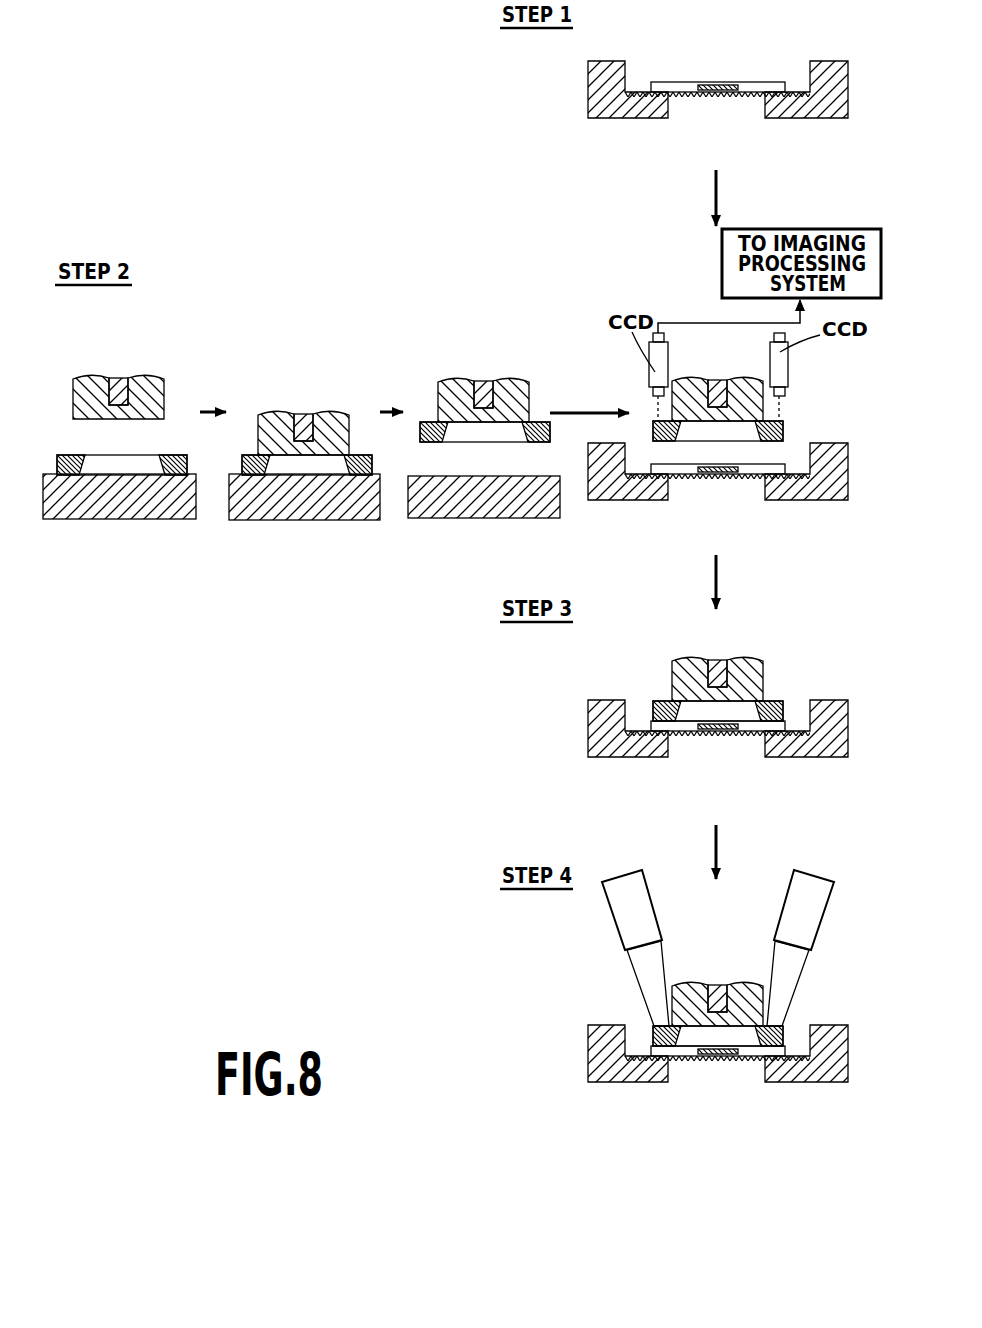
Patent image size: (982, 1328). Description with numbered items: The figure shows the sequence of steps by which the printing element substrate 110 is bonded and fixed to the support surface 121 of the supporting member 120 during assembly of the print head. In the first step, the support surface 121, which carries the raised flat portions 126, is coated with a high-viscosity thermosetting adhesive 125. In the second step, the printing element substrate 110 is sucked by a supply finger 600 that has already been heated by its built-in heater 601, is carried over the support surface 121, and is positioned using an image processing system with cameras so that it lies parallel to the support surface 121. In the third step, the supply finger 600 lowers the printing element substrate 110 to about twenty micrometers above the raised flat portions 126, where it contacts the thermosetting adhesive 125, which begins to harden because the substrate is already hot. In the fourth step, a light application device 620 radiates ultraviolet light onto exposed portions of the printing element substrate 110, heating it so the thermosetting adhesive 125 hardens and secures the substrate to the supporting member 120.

The printing element substrate 110 is at (172, 455).
The supporting member 120 is at (828, 78).
The support surface 121 is at (725, 98).
The thermosetting adhesive 125 is at (678, 88).
The raised flat portions 126 is at (730, 86).
The supply finger 600 is at (148, 398).
The built-in heater 601 is at (118, 383).
The light application device 620 is at (622, 912).